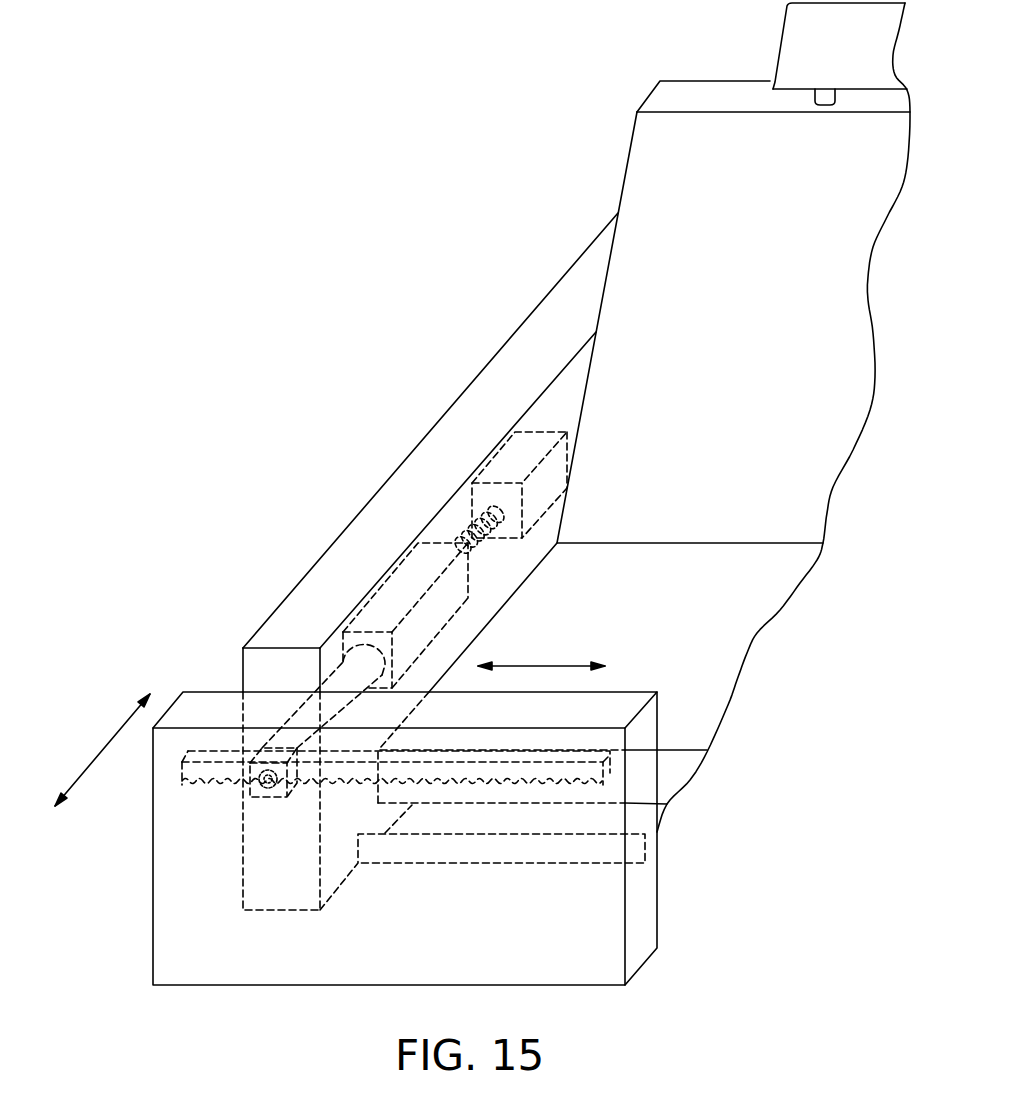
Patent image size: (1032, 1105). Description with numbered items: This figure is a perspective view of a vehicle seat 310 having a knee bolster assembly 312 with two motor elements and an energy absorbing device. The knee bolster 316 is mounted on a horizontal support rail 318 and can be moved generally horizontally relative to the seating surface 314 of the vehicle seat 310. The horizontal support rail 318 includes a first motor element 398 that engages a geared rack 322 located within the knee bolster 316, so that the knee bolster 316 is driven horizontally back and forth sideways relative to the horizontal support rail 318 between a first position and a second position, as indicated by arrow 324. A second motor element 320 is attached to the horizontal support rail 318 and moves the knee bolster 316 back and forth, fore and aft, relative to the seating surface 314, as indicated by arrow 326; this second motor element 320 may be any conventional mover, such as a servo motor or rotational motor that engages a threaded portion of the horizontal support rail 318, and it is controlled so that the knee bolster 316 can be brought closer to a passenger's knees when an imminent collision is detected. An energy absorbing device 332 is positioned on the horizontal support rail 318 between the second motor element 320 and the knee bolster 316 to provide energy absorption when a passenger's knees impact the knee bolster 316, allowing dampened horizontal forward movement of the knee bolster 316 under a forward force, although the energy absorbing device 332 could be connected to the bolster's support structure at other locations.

The vehicle seat 310 is at (712, 655).
The knee bolster assembly 312 is at (148, 855).
The seating surface 314 is at (612, 199).
The knee bolster 316 is at (182, 930).
The horizontal support rail 318 is at (463, 525).
The second motor element 320 is at (517, 455).
The geared rack 322 is at (612, 768).
The arrow 324 is at (543, 666).
The arrow 326 is at (100, 750).
The energy absorbing device 332 is at (390, 603).
The first motor element 398 is at (265, 745).